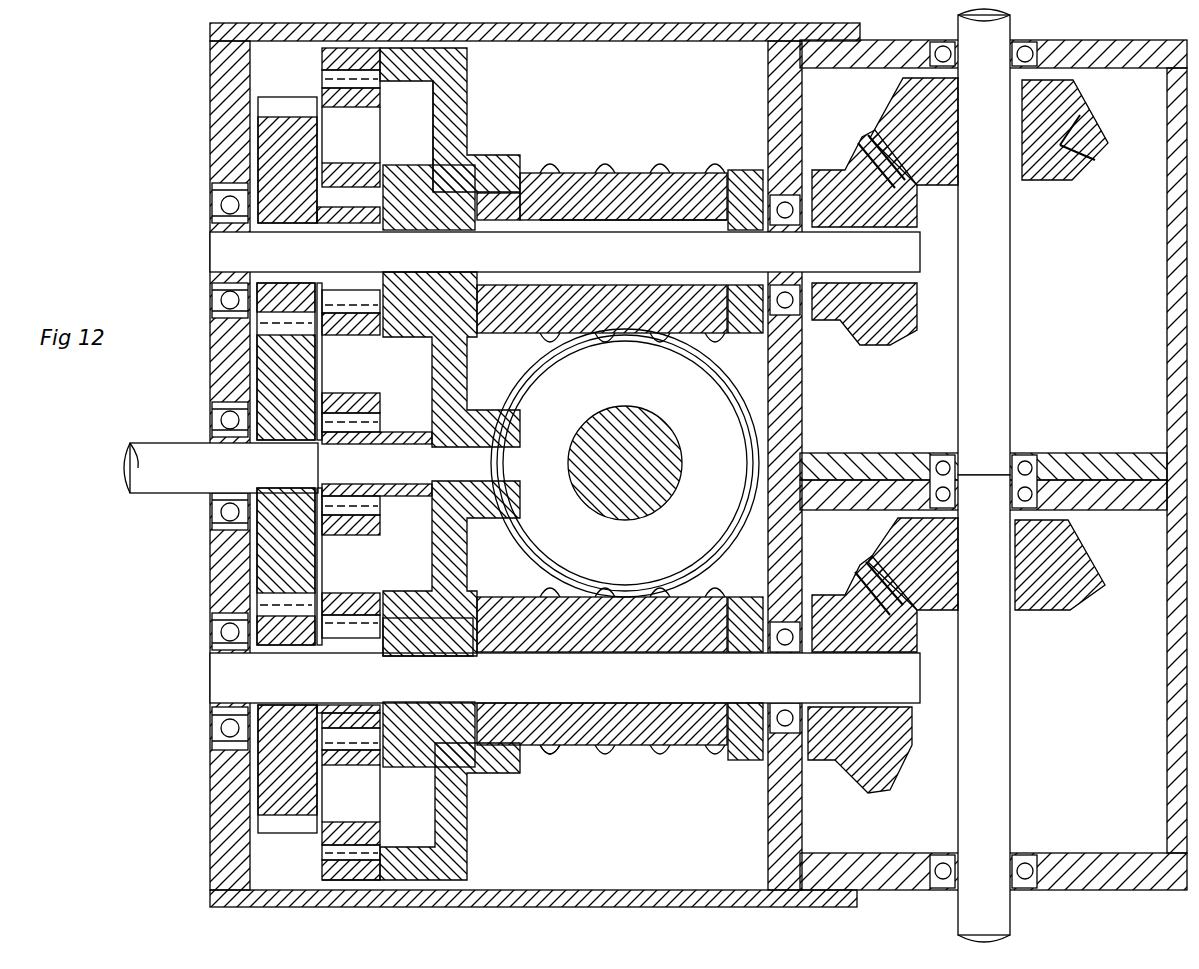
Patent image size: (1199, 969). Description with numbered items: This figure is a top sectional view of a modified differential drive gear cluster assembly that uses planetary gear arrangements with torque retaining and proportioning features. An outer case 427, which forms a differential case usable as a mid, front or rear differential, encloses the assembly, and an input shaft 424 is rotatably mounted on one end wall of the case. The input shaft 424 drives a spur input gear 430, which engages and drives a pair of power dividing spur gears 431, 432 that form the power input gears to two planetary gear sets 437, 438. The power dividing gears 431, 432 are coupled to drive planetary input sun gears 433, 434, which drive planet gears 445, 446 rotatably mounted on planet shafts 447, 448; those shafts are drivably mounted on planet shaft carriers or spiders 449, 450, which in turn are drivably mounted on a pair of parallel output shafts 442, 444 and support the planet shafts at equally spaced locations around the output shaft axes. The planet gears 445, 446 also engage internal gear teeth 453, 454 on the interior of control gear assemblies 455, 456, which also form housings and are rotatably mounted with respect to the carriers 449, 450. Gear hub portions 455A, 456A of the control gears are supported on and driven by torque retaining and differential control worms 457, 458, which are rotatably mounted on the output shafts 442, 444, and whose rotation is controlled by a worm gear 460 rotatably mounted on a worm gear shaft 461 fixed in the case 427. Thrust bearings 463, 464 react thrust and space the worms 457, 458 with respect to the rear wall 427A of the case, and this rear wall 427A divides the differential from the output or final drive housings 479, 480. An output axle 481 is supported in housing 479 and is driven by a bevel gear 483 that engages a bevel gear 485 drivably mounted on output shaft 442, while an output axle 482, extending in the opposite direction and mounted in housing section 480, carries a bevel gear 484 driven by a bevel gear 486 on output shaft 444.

The input shaft 424 is at (178, 447).
The outer case 427 is at (225, 160).
The rear wall 427A is at (790, 818).
The spur input gear 430 is at (278, 558).
The power dividing spur gear 431 is at (258, 792).
The power dividing spur gear 432 is at (270, 145).
The planetary input sun gear 433 is at (352, 645).
The planetary input sun gear 434 is at (363, 197).
The planetary gear set 437 is at (407, 787).
The planetary gear set 438 is at (492, 108).
The output shaft 442 is at (633, 692).
The output shaft 444 is at (672, 240).
The planet gear 445 is at (327, 530).
The planet gear 446 is at (441, 88).
The planet shaft 447 is at (445, 566).
The planet shaft 448 is at (357, 155).
The planet shaft carrier 449 is at (463, 653).
The planet shaft carrier 450 is at (440, 280).
The internal gear teeth 453 is at (330, 862).
The internal gear teeth 454 is at (332, 85).
The control gear assembly 455 is at (455, 832).
The gear hub portion 455A is at (542, 765).
The control gear assembly 456 is at (425, 52).
The gear hub portion 456A is at (522, 165).
The torque retaining and differential control worm 457 is at (690, 762).
The torque retaining and differential control worm 458 is at (742, 175).
The worm gear 460 is at (723, 425).
The worm gear shaft 461 is at (633, 493).
The thrust bearing 463 is at (782, 578).
The thrust bearing 464 is at (782, 153).
The output housing 479 is at (1118, 876).
The output housing 480 is at (1138, 75).
The output axle 481 is at (995, 710).
The output axle 482 is at (990, 308).
The bevel gear 483 is at (1050, 548).
The bevel gear 484 is at (1065, 150).
The bevel gear 485 is at (868, 750).
The bevel gear 486 is at (900, 205).